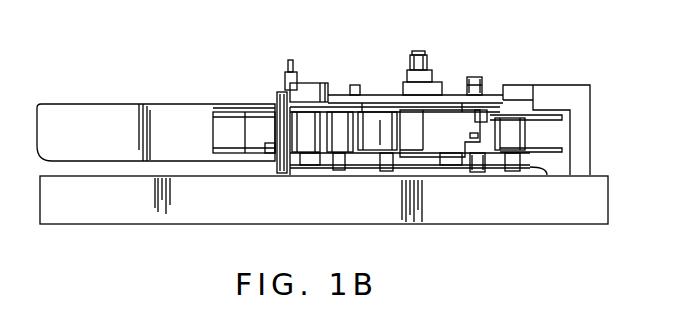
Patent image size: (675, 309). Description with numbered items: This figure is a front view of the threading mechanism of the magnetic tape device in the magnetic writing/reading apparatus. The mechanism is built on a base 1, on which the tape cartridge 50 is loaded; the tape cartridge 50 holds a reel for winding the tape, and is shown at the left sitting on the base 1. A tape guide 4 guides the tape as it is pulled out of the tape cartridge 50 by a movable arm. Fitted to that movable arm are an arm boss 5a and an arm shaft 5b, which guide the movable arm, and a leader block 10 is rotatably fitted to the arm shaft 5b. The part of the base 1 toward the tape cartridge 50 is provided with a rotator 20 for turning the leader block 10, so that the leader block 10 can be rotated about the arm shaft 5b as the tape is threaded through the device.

The base 1 is at (98, 213).
The tape guide 4 is at (377, 162).
The arm boss 5a is at (474, 77).
The arm shaft 5b is at (470, 160).
The leader block 10 is at (432, 140).
The rotator 20 is at (277, 98).
The tape cartridge 50 is at (110, 118).